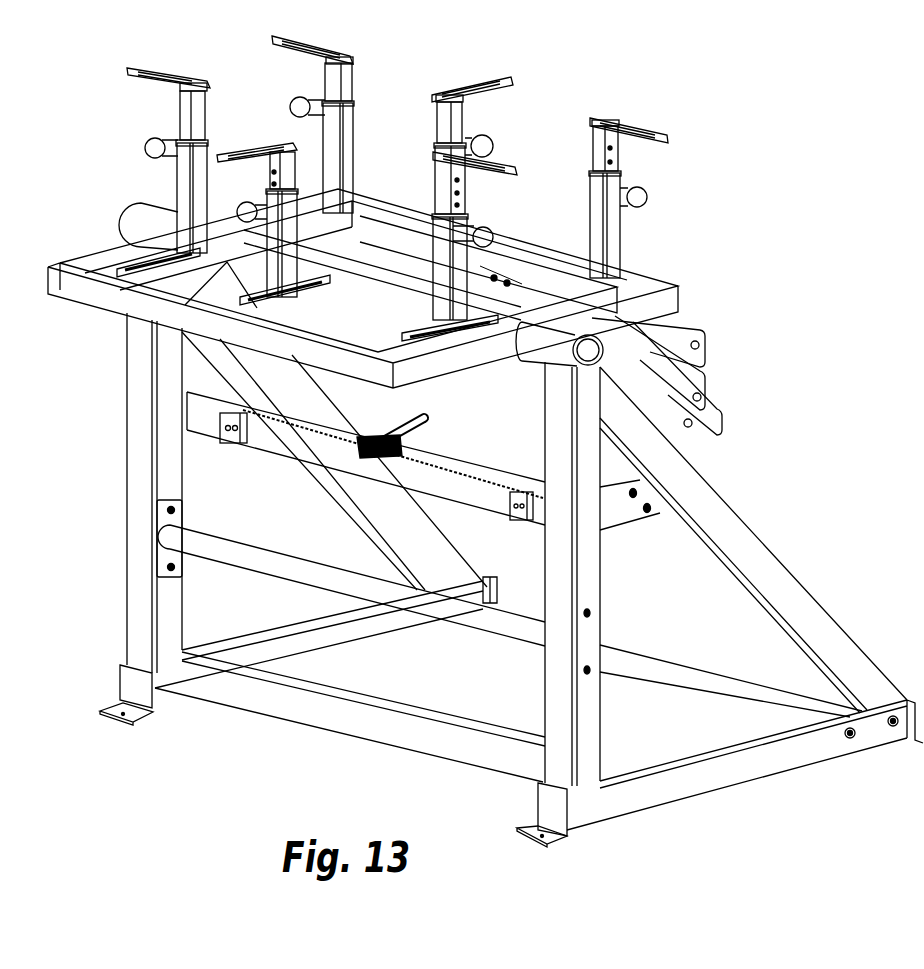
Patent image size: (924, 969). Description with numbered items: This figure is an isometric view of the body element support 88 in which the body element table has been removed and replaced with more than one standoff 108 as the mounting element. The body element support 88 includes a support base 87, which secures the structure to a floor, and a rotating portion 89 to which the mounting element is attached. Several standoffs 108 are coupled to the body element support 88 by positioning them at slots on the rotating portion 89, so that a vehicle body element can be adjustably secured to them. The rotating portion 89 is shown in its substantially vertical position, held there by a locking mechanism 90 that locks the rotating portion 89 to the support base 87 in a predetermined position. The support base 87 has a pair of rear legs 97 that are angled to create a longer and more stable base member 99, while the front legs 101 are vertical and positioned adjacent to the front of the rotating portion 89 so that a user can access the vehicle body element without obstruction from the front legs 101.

The support base 87 is at (818, 572).
The body element support 88 is at (808, 470).
The rotating portion 89 is at (669, 250).
The locking mechanism 90 is at (444, 407).
The rear legs 97 is at (372, 481).
The base member 99 is at (290, 660).
The front legs 101 is at (167, 633).
The standoff 108 is at (130, 110).